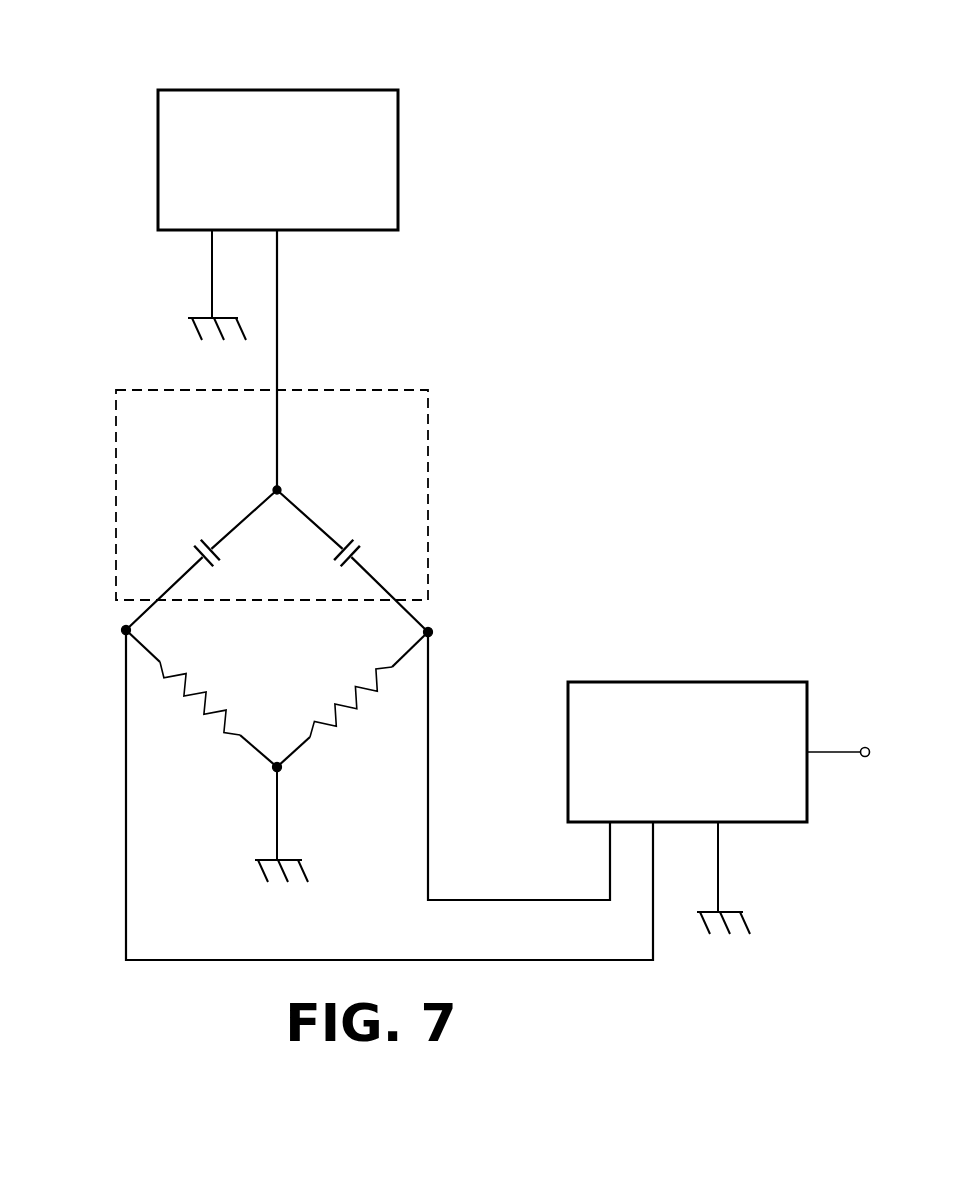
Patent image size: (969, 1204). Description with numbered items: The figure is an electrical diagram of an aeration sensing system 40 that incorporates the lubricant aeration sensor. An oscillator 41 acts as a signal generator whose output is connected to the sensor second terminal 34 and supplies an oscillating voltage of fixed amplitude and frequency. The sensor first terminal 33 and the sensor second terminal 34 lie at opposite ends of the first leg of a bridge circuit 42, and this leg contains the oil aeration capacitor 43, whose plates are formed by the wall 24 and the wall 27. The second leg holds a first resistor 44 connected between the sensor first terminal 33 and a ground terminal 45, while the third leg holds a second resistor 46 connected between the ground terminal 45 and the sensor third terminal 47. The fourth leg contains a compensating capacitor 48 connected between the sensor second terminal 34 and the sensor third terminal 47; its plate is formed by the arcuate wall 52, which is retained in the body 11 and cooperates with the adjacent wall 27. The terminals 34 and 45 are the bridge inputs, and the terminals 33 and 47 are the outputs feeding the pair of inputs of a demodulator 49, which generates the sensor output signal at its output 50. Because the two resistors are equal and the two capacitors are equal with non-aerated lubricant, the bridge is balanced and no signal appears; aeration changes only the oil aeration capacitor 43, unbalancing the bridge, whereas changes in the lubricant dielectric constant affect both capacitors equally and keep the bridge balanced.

The body 11 is at (432, 386).
The wall 24 is at (360, 557).
The wall 27 is at (274, 545).
The sensor first terminal 33 is at (428, 632).
The sensor second terminal 34 is at (304, 362).
The aeration sensing system 40 is at (655, 528).
The oscillator 41 is at (353, 88).
The bridge circuit 42 is at (446, 702).
The oil aeration capacitor 43 is at (374, 533).
The first resistor 44 is at (367, 695).
The ground terminal 45 is at (280, 771).
The second resistor 46 is at (183, 672).
The sensor third terminal 47 is at (126, 630).
The compensating capacitor 48 is at (180, 533).
The demodulator 49 is at (738, 682).
The output 50 is at (832, 747).
The arcuate plate or wall 52 is at (198, 553).